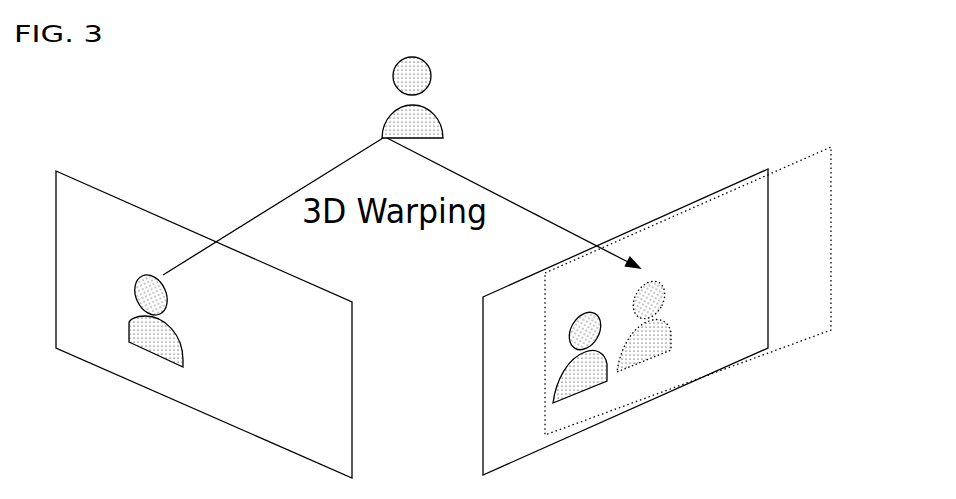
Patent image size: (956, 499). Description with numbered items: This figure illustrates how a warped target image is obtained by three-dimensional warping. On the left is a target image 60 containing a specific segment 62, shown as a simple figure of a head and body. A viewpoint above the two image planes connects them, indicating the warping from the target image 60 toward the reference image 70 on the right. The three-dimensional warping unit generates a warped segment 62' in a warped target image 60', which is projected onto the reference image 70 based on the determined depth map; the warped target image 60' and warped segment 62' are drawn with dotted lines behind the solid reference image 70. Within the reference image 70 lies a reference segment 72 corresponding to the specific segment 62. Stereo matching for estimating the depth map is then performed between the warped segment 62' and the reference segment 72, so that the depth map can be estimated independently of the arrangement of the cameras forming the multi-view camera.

The target image 60 is at (186, 324).
The specific segment 62 is at (156, 363).
The reference image 70 is at (477, 427).
The reference segment 72 is at (592, 387).
The warped target image 60' is at (724, 291).
The warped segment 62' is at (682, 352).